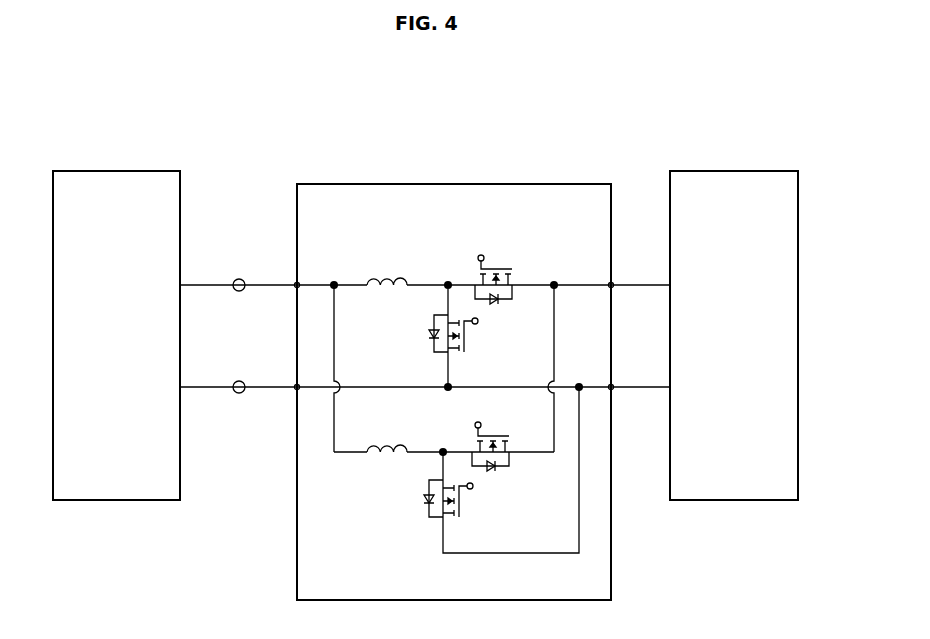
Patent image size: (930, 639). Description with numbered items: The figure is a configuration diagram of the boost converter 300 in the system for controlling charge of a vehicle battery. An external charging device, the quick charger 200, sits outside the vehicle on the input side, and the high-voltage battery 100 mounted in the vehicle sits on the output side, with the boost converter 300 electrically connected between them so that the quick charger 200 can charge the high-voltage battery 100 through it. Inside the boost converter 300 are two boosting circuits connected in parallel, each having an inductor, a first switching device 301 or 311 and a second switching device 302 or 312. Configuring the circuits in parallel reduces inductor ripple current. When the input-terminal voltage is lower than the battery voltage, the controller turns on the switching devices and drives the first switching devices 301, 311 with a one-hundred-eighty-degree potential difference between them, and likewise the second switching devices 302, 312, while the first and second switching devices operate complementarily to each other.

The high-voltage battery 100 is at (733, 171).
The external charging device (quick charger) 200 is at (116, 171).
The boost converter 300 is at (439, 347).
The first switching device 301 is at (415, 337).
The second switching device 302 is at (516, 268).
The first switching device 311 is at (410, 504).
The second switching device 312 is at (507, 468).